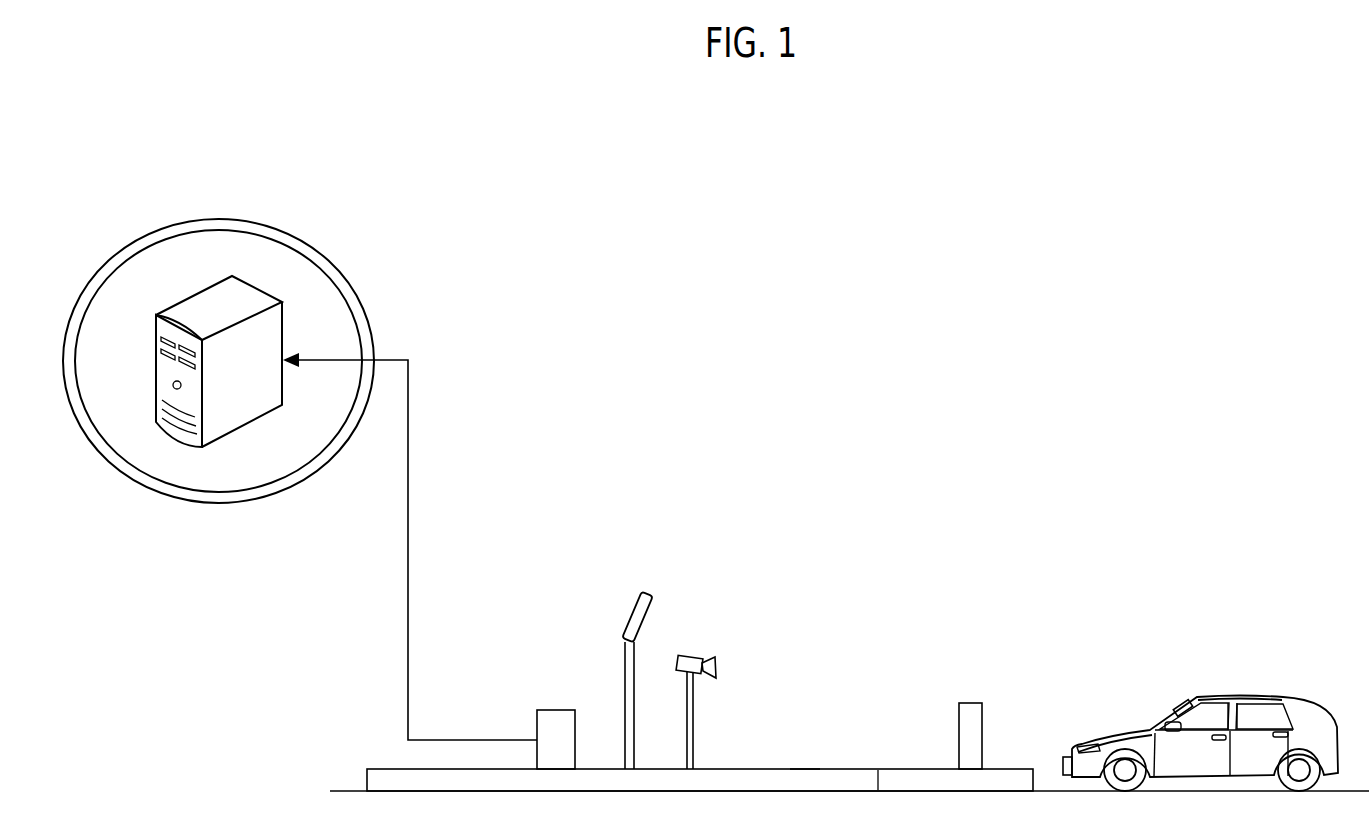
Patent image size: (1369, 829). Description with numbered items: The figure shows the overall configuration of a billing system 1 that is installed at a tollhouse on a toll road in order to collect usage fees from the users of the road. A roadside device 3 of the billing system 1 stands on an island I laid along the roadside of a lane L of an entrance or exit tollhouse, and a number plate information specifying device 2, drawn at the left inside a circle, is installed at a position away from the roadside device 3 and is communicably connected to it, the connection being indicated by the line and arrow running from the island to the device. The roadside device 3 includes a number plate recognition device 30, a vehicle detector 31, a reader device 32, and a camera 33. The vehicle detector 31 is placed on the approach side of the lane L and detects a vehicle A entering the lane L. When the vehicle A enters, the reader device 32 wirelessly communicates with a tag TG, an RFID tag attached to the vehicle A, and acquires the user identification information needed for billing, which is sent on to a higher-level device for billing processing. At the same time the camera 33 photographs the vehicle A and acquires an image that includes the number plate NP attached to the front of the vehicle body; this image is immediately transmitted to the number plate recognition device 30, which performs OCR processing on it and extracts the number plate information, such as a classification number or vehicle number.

The billing system 1 is at (678, 253).
The number plate information specifying device 2 is at (190, 297).
The roadside device 3 is at (809, 544).
The number plate recognition device 30 is at (555, 708).
The vehicle detector 31 is at (968, 703).
The reader device 32 is at (650, 590).
The camera 33 is at (692, 657).
The island I is at (800, 768).
The lane L is at (878, 790).
The vehicle A is at (1255, 692).
The number plate NP is at (1064, 756).
The tag TG is at (1178, 700).